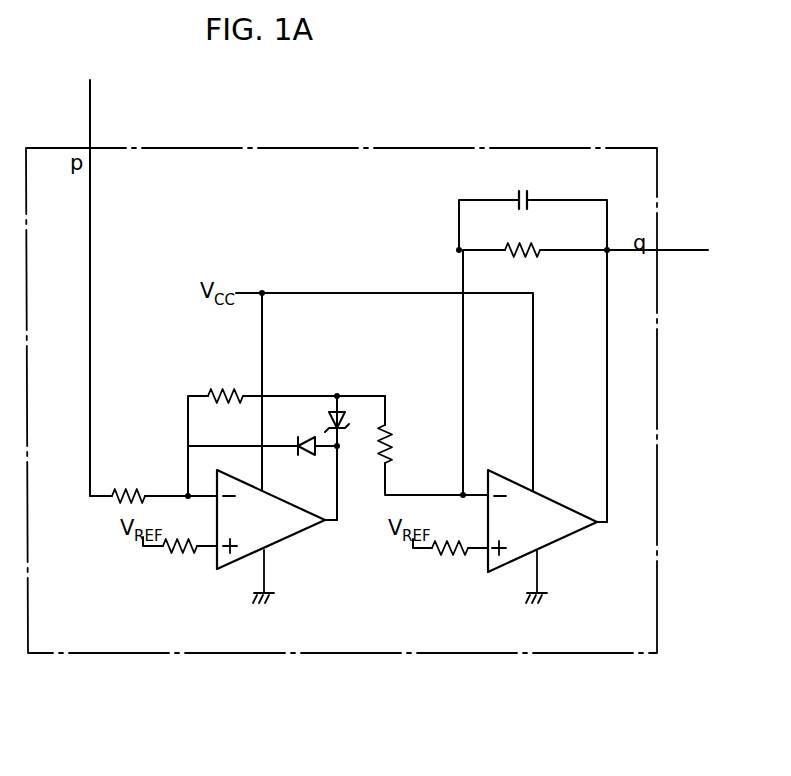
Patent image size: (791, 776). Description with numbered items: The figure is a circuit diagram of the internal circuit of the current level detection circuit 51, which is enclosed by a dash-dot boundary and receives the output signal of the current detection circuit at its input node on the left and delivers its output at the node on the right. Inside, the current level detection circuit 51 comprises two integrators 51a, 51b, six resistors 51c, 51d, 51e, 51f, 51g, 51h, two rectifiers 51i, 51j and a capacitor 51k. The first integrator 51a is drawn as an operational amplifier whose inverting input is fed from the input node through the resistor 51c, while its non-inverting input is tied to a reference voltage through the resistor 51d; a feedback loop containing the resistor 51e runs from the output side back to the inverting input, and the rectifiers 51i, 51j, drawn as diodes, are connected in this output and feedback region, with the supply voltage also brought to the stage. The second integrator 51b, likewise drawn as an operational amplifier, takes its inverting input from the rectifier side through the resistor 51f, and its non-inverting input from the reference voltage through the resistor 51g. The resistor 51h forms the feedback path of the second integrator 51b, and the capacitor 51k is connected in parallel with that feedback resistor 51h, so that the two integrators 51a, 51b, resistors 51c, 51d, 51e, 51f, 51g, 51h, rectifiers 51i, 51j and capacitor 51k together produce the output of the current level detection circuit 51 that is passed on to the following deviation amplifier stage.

The current level detection circuit 51 is at (425, 654).
The integrator 51a is at (305, 535).
The integrator 51b is at (560, 548).
The resistor 51c is at (132, 486).
The resistor 51d is at (180, 556).
The resistor 51e is at (224, 388).
The resistor 51f is at (393, 445).
The resistor 51g is at (448, 557).
The resistor 51h is at (522, 256).
The rectifier 51i is at (307, 438).
The rectifier 51j is at (345, 418).
The capacitor 51k is at (527, 192).